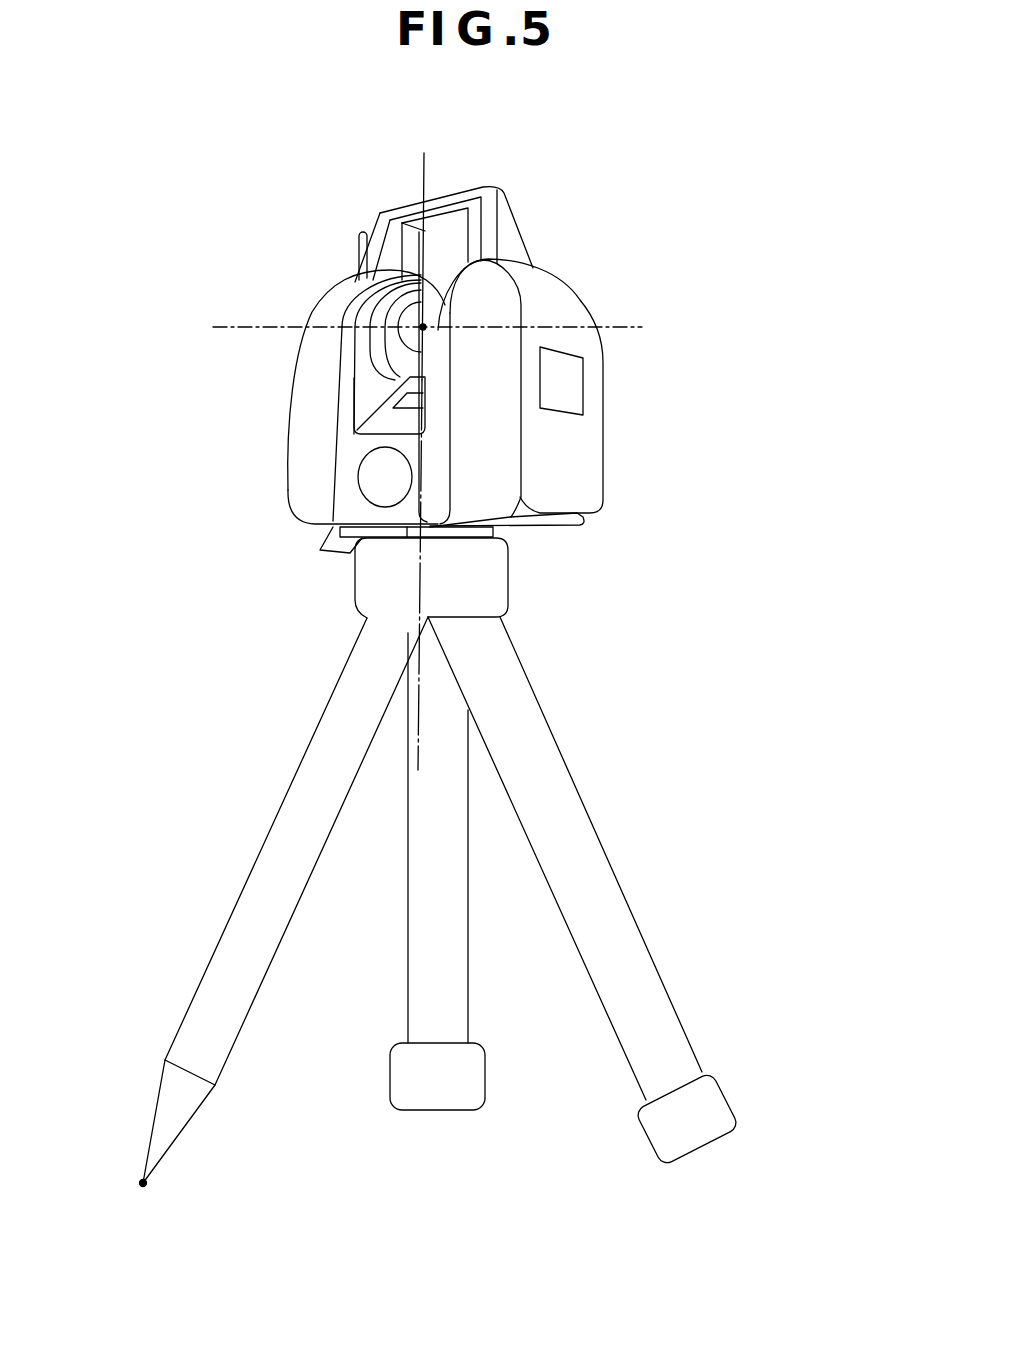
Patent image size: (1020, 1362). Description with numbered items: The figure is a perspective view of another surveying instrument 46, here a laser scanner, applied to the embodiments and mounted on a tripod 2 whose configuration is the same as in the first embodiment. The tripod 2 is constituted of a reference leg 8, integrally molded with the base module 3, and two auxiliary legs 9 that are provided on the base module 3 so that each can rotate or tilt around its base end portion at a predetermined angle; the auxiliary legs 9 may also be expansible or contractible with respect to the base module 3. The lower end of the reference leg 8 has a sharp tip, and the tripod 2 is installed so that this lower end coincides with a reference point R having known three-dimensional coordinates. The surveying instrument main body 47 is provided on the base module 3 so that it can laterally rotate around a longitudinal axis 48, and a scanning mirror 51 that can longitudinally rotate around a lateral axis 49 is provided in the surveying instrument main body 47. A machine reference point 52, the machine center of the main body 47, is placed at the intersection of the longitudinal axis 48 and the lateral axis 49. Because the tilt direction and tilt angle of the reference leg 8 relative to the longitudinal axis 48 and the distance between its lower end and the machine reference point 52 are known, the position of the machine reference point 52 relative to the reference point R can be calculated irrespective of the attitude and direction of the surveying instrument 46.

The tripod 2 is at (555, 738).
The base module 3 is at (508, 570).
The reference leg 8 is at (237, 895).
The auxiliary legs 9 is at (617, 877).
The surveying instrument 46 is at (262, 608).
The surveying instrument main body 47 is at (292, 407).
The longitudinal axis 48 is at (427, 172).
The lateral axis 49 is at (657, 320).
The scanning mirror 51 is at (412, 314).
The machine reference point 52 is at (433, 318).
The reference point R is at (157, 1200).